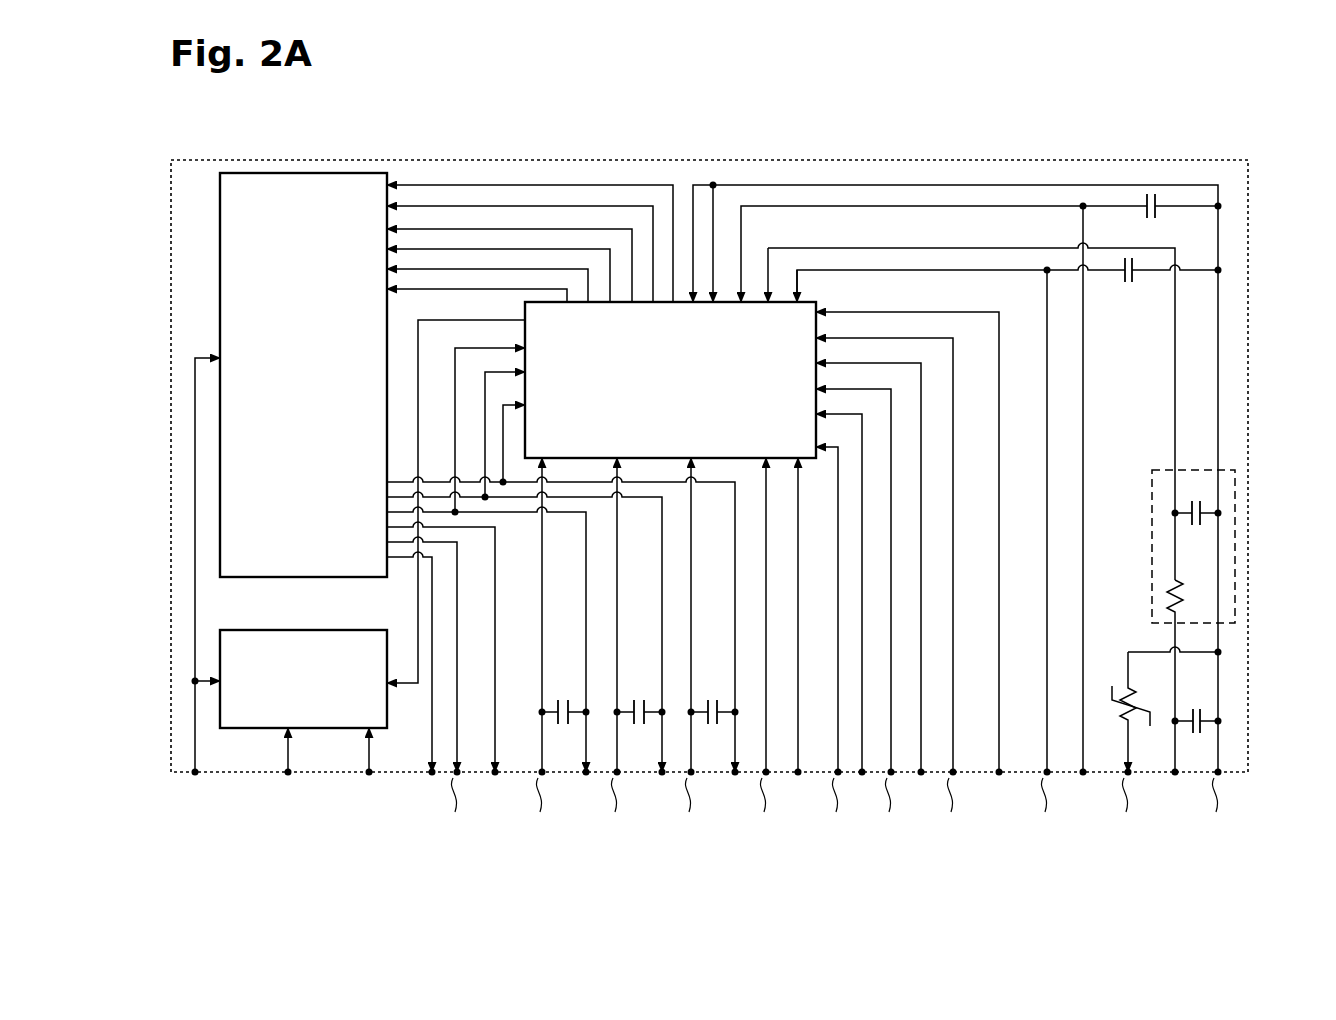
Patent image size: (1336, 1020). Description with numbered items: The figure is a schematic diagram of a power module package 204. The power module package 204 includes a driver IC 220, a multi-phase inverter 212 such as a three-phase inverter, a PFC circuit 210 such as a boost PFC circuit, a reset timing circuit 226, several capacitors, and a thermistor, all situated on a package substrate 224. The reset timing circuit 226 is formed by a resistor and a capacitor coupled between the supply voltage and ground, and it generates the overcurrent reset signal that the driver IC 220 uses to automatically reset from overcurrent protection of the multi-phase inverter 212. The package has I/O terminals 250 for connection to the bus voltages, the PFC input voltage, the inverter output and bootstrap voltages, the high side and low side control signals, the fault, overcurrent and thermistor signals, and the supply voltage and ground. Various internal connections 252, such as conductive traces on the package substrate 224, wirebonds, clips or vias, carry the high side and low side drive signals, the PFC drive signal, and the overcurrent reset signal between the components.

The power module package 204 is at (1188, 100).
The PFC circuit 210 is at (318, 715).
The multi-phase inverter 212 is at (318, 409).
The driver IC 220 is at (685, 401).
The package substrate 224 is at (1144, 409).
The reset timing circuit 226 is at (1154, 504).
The I/O terminals 250 is at (707, 773).
The internal connections 252 is at (707, 477).